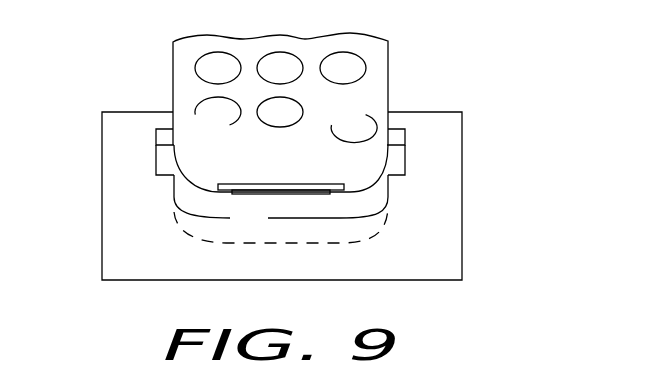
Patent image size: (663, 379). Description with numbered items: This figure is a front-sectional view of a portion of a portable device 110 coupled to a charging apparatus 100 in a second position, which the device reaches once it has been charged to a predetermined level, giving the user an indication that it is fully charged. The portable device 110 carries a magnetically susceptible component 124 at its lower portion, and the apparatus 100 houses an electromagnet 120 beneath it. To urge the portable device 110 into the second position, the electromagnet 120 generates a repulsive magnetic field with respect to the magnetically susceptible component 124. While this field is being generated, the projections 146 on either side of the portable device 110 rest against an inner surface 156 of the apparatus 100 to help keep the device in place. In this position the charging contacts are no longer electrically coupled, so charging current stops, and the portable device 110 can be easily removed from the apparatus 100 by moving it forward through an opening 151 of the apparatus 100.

The apparatus 100 is at (475, 206).
The portable device 110 is at (148, 50).
The electromagnet 120 is at (271, 241).
The magnetically susceptible component 124 is at (288, 184).
The extensions 146 is at (281, 175).
The opening 151 is at (178, 204).
The inner surface 156 is at (160, 136).